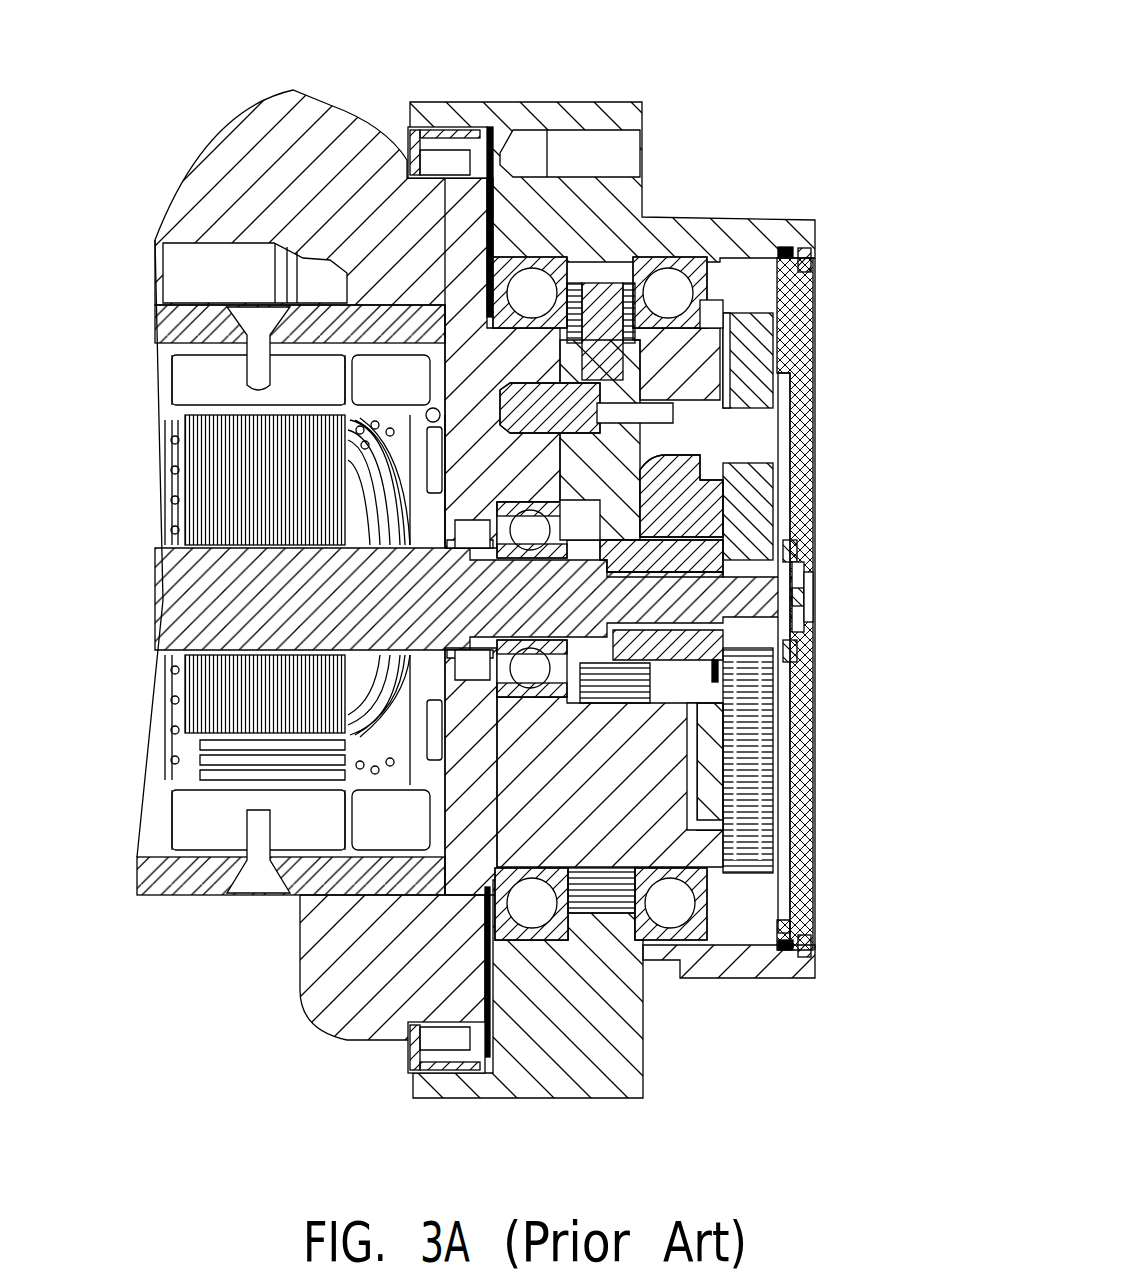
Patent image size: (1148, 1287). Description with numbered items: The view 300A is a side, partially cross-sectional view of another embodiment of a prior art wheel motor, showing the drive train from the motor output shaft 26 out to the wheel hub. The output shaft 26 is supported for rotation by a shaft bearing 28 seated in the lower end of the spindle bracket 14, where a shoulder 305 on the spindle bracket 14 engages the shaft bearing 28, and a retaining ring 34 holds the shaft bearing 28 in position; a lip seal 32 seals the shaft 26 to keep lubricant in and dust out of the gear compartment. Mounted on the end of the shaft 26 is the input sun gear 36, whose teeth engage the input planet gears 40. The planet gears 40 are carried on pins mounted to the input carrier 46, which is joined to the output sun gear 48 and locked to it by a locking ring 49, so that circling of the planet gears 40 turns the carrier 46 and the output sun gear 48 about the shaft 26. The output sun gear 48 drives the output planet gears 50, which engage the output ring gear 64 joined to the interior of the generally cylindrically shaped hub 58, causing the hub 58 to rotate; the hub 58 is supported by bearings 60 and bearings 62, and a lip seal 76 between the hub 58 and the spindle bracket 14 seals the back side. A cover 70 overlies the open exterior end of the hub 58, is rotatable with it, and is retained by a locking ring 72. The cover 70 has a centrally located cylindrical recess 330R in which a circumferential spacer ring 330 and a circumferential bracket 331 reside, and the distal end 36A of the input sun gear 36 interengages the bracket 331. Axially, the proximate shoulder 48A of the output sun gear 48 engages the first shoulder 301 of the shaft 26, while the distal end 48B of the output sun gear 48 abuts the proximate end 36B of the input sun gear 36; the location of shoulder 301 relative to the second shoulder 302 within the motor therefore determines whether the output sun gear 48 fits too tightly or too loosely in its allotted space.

The side partially cross-sectional view of another embodiment of the prior art 300A is at (737, 38).
The spindle bracket 14 is at (252, 158).
The generally cylindrically shaped hub 58 is at (507, 102).
The output planet gears 50 is at (604, 295).
The locking ring 72 is at (805, 262).
The input planet gear 40 is at (755, 375).
The proximate shoulder on output sun gear 48A is at (600, 565).
The shoulder on shaft 301 is at (640, 590).
The output sun gear 48 is at (690, 552).
The distal end of output sun gear 48B is at (735, 575).
The proximate end of input sun gear 36B is at (790, 535).
The circumferential spacer 330 is at (797, 560).
The circumferential bracket 331 is at (802, 590).
The centrally located recess 330R is at (806, 620).
The distal end of input sun gear 36A is at (778, 655).
The input sun gear 36 is at (760, 680).
The locking ring 49 is at (720, 672).
The input carrier 46 is at (710, 770).
The cover 70 is at (807, 868).
The shoulder on drive shaft 302 is at (440, 560).
The output shaft 26 is at (175, 630).
The lip seal 32 is at (430, 780).
The shoulder on spindle 305 is at (447, 707).
The shaft bearing 28 is at (525, 690).
The lip seal 76 is at (420, 1070).
The bearings 62 is at (528, 927).
The retaining ring 34 is at (558, 600).
The output ring gear 64 is at (615, 920).
The bearings 60 is at (673, 925).